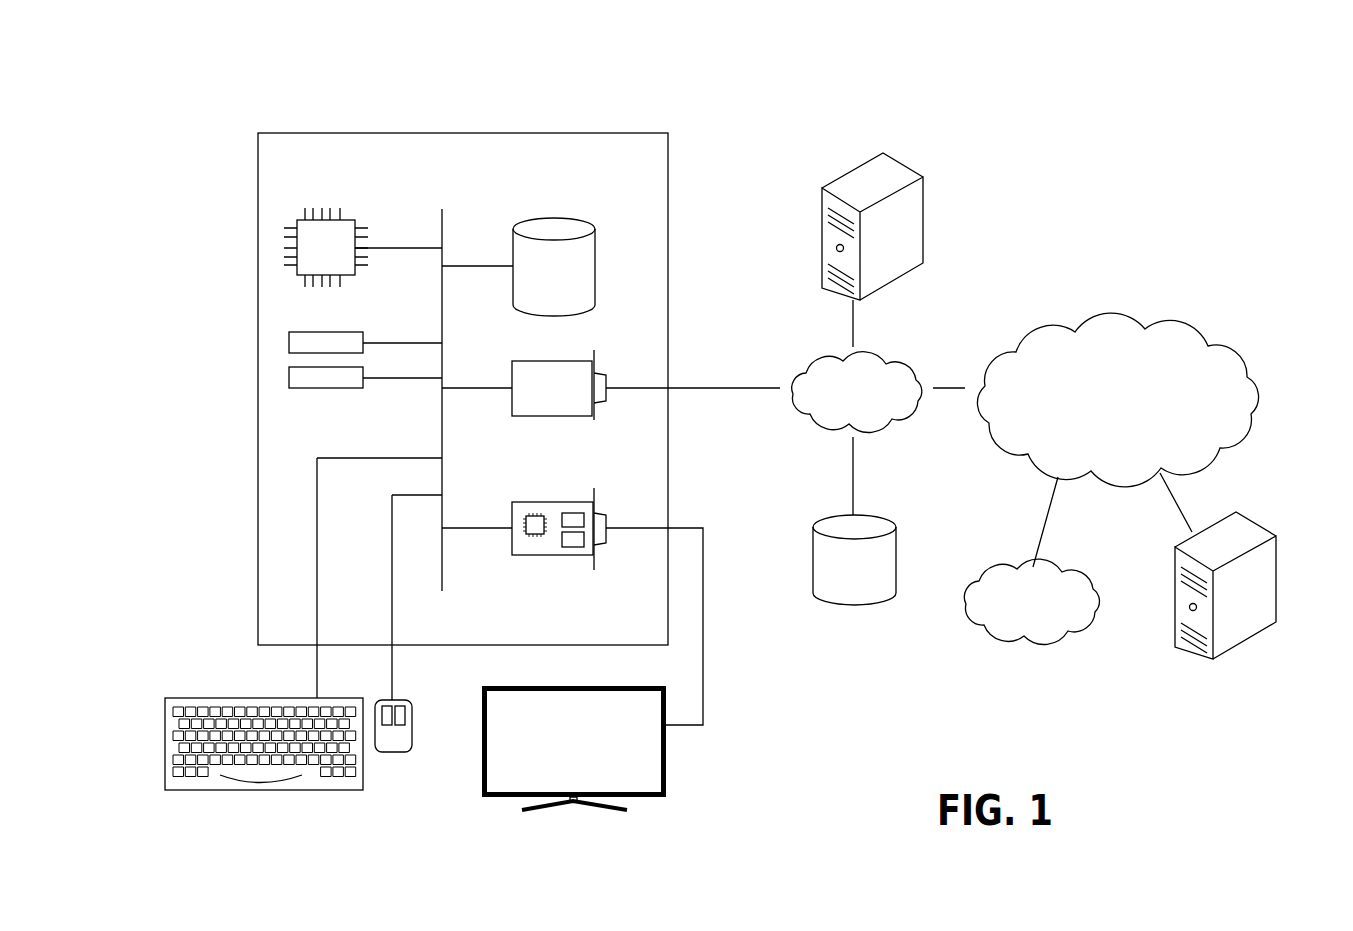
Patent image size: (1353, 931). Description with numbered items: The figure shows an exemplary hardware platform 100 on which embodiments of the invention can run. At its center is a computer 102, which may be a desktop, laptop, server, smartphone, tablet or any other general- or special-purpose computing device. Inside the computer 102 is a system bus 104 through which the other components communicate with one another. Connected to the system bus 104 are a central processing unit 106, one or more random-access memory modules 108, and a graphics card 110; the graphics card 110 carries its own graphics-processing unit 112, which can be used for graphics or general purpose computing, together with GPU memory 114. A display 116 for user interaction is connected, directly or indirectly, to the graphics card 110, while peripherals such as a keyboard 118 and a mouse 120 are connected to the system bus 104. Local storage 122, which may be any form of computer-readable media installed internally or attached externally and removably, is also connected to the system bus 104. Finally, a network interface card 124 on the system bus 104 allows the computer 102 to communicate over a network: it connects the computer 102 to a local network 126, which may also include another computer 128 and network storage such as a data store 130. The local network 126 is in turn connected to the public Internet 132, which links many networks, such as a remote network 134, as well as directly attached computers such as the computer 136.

The computing system 100 is at (1202, 142).
The computer 102 is at (622, 133).
The system bus 104 is at (445, 220).
The central processing unit 106 is at (350, 217).
The random-access memory modules 108 is at (365, 373).
The graphics card 110 is at (512, 512).
The graphics-processing unit 112 is at (535, 534).
The GPU memory 114 is at (570, 547).
The display 116 is at (667, 777).
The keyboard 118 is at (267, 792).
The mouse 120 is at (388, 755).
The local storage 122 is at (597, 250).
The network interface card 124 is at (512, 372).
The local network 126 is at (903, 347).
The computer 128 is at (907, 162).
The data store 130 is at (885, 518).
The public Internet 132 is at (1160, 313).
The remote network 134 is at (1083, 560).
The computer 136 is at (1253, 517).